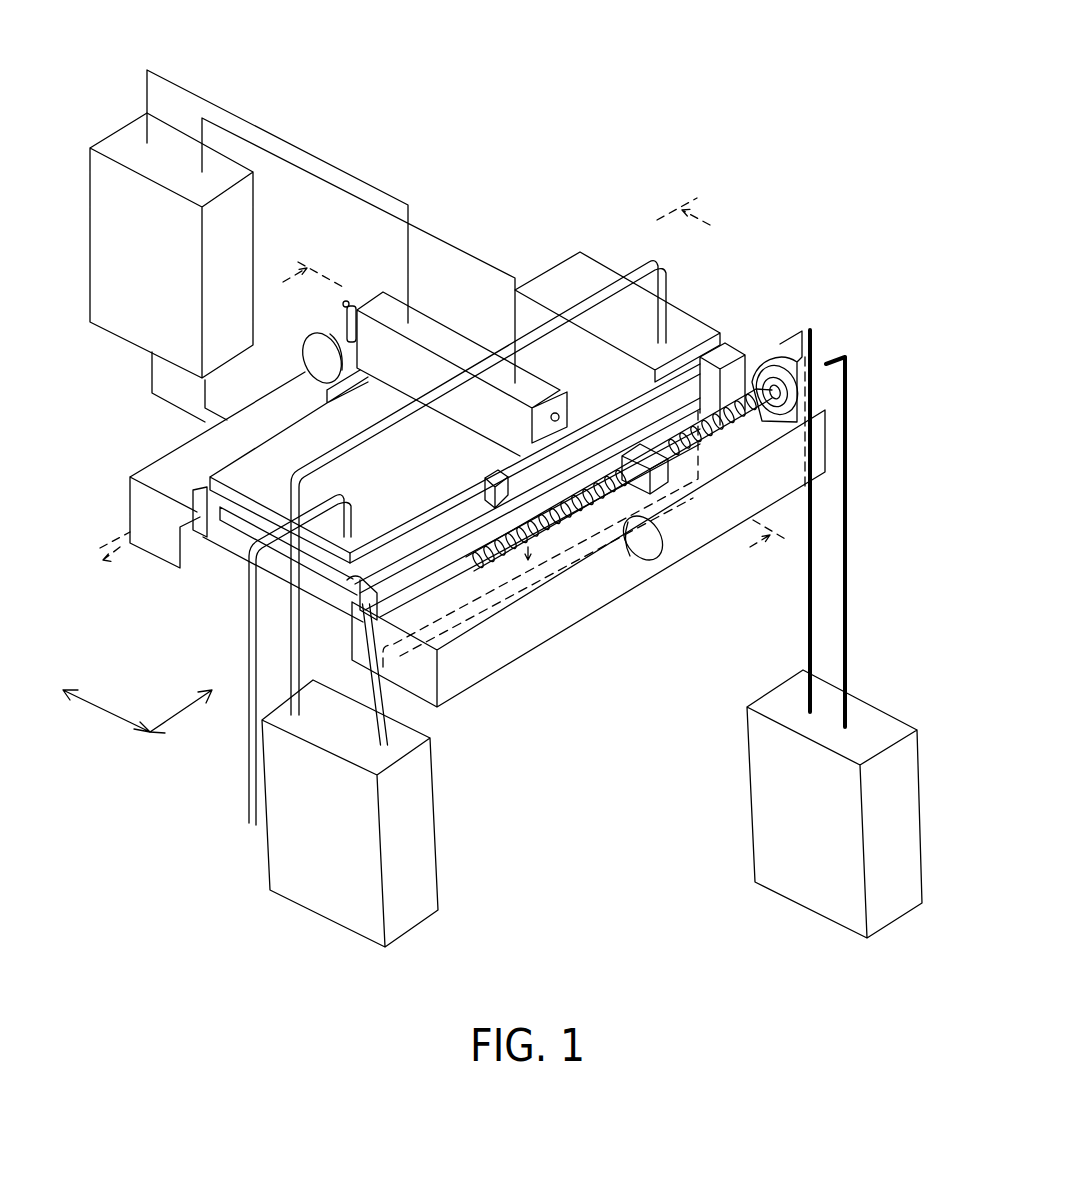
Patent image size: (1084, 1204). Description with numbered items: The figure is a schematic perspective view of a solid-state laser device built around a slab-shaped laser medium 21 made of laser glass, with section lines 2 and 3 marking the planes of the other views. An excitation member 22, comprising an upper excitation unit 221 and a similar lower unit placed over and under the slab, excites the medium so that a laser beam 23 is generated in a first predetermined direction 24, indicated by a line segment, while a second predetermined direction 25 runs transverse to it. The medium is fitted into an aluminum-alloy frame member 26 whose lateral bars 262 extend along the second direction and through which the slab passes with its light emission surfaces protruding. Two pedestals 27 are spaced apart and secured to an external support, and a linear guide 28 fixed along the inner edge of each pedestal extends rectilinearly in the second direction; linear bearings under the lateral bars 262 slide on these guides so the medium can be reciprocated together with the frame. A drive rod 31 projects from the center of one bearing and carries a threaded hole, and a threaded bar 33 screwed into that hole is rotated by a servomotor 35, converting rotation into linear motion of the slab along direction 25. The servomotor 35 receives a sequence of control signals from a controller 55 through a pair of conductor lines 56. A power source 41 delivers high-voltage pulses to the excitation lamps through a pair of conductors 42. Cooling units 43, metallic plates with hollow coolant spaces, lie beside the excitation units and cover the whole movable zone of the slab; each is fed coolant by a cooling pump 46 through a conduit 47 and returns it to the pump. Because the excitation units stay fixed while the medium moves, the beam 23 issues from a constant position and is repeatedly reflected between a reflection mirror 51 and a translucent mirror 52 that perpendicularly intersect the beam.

The section line 2 is at (411, 394).
The section line 3 is at (527, 412).
The slab-shaped laser medium 21 is at (612, 440).
The excitation member 22 is at (470, 330).
The laser beam 23 is at (592, 512).
The first predetermined direction 24 is at (98, 715).
The second predetermined direction 25 is at (183, 713).
The frame member 26 is at (647, 397).
The pedestals 27 is at (158, 550).
The linear guide 28 is at (190, 497).
The drive rod 31 is at (657, 481).
The threaded bar 33 is at (760, 402).
The servomotor 35 is at (810, 363).
The power source 41 is at (127, 328).
The conductors 42 is at (283, 136).
The cooling units 43 is at (590, 270).
The cooling pump 46 is at (323, 907).
The conduit 47 is at (243, 617).
The reflection mirror 51 is at (303, 352).
The translucent mirror 52 is at (640, 553).
The controller 55 is at (807, 893).
The conductor lines 56 is at (808, 620).
The upper excitation unit 221 is at (350, 313).
The lateral bars 262 is at (492, 473).